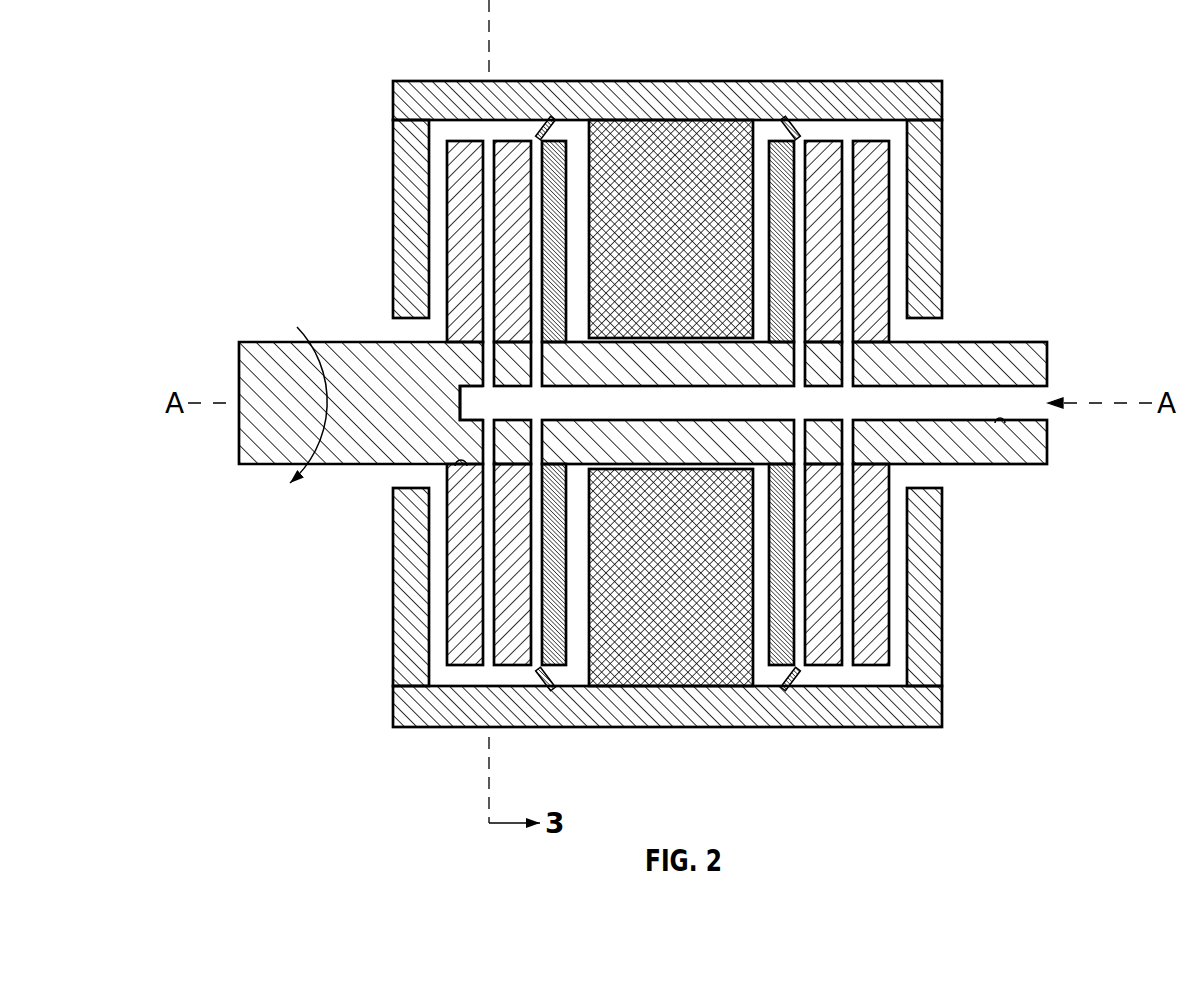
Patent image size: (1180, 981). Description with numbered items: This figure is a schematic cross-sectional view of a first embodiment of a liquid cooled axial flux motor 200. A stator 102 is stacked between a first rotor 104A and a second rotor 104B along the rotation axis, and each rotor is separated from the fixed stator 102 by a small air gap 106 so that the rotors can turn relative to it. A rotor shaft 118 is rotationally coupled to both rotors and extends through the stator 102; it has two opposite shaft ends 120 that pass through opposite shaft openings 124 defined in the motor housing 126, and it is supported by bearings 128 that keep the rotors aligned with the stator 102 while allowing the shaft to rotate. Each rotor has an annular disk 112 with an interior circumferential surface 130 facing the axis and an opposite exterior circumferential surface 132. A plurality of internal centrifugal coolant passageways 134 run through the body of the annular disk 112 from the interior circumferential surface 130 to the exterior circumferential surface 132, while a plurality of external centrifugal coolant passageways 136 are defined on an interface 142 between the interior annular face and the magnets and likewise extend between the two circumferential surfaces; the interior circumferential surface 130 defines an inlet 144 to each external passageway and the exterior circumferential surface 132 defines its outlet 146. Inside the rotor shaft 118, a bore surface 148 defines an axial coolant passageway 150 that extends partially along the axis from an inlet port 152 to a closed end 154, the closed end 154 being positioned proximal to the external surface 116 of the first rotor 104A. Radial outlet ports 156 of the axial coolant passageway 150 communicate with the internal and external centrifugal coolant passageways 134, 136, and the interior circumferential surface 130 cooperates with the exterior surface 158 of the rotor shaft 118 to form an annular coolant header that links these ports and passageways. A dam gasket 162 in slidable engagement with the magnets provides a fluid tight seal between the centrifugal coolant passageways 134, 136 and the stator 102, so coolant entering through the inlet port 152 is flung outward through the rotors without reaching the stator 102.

The liquid cooled axial flux motor 200 is at (1030, 148).
The stator 102 is at (678, 155).
The first rotor 104A is at (462, 212).
The second rotor 104B is at (870, 242).
The air gap 106 is at (583, 157).
The annular disk 112 is at (872, 155).
The external surface 116 is at (447, 637).
The rotor shaft 118 is at (337, 443).
The shaft ends 120 is at (248, 353).
The shaft openings 124 is at (393, 325).
The motor housing 126 is at (413, 718).
The bearings 128 is at (943, 478).
The interior circumferential surface 130 is at (463, 468).
The exterior circumferential surface 132 is at (513, 157).
The internal centrifugal coolant passageways 134 is at (490, 653).
The external centrifugal coolant passageways 136 is at (537, 653).
The interface 142 is at (798, 157).
The inlet 144 is at (800, 532).
The outlet 146 is at (802, 660).
The bore surface 148 is at (997, 424).
The axial coolant passageway 150 is at (1048, 392).
The inlet port 152 is at (1040, 410).
The closed end 154 is at (457, 408).
The radial outlet ports 156 is at (535, 540).
The exterior surface 158 is at (253, 467).
The dam gasket 162 is at (547, 680).